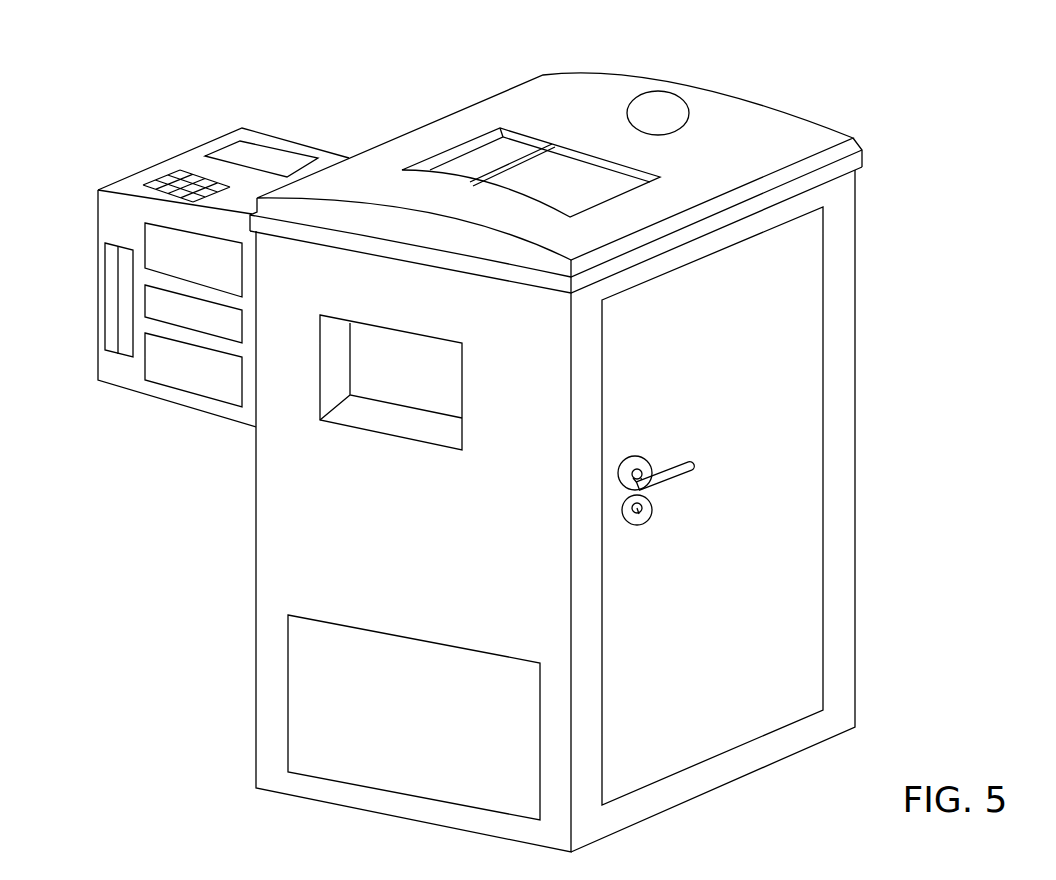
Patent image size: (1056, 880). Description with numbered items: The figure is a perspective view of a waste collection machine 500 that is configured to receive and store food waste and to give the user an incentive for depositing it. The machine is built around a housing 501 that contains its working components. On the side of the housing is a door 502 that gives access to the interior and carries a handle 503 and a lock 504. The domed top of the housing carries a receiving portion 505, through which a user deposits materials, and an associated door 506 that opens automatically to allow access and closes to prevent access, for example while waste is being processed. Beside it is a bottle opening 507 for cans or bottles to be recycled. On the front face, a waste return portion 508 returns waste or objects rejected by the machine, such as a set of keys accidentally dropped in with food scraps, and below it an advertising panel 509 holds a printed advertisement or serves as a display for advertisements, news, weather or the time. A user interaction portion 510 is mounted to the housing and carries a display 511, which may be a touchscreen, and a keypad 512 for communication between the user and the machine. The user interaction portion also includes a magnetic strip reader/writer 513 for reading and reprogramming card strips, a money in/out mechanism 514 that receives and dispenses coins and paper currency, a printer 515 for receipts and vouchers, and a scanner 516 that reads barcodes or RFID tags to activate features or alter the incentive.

The waste collection machine 500 is at (924, 190).
The housing 501 is at (807, 135).
The door 502 is at (760, 710).
The handle 503 is at (681, 465).
The lock 504 is at (643, 518).
The receiving portion 505 is at (555, 158).
The door 506 is at (485, 155).
The bottle opening 507 is at (655, 100).
The waste return portion 508 is at (445, 378).
The advertising panel 509 is at (303, 640).
The user interaction portion 510 is at (126, 106).
The display 511 is at (272, 152).
The keypad 512 is at (150, 187).
The magnetic strip reader/writer 513 is at (115, 285).
The money in/out mechanism 514 is at (155, 233).
The printer 515 is at (187, 383).
The scanner 516 is at (233, 323).